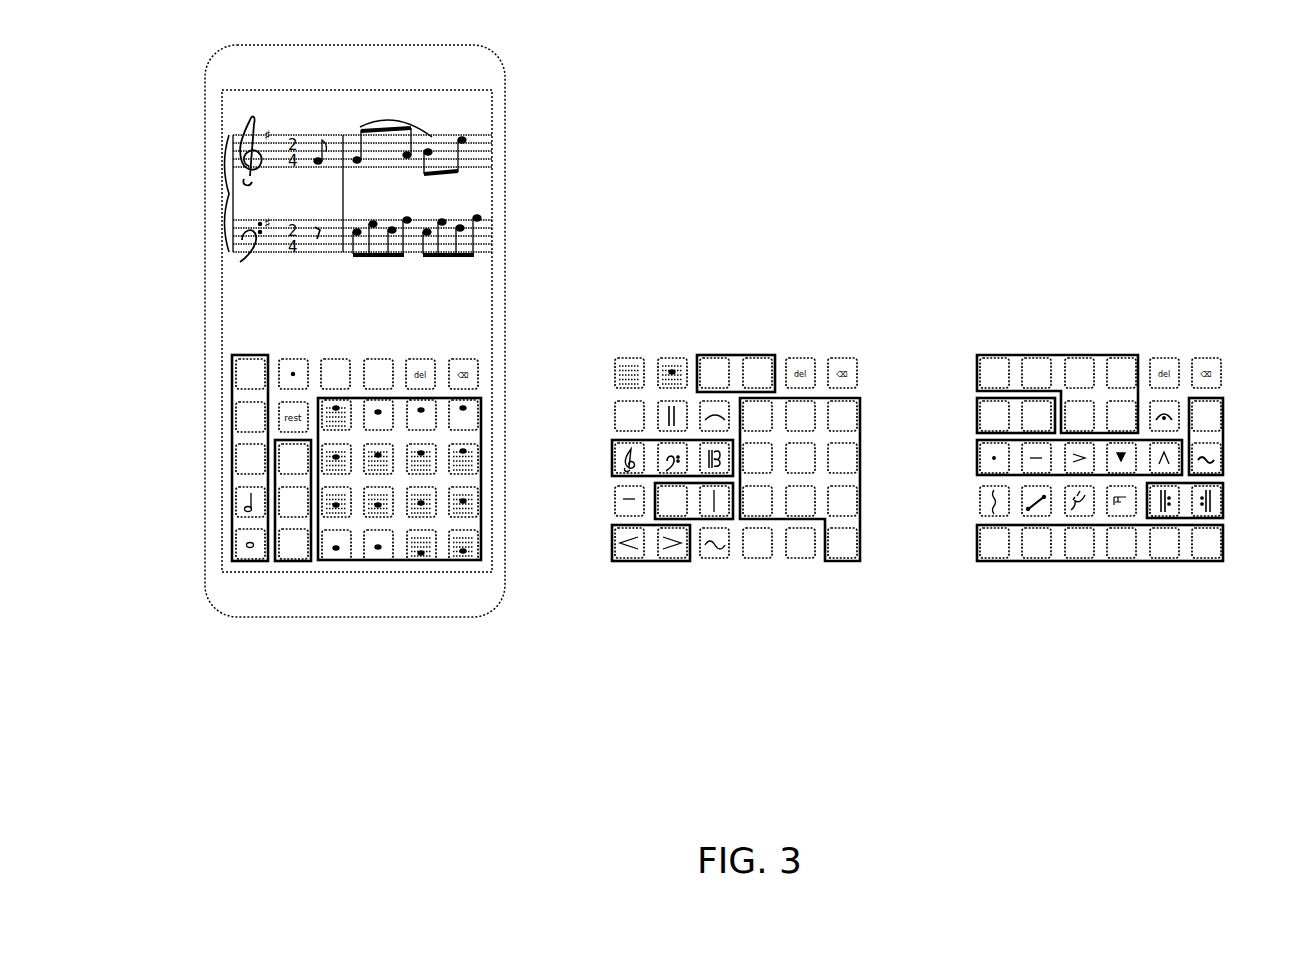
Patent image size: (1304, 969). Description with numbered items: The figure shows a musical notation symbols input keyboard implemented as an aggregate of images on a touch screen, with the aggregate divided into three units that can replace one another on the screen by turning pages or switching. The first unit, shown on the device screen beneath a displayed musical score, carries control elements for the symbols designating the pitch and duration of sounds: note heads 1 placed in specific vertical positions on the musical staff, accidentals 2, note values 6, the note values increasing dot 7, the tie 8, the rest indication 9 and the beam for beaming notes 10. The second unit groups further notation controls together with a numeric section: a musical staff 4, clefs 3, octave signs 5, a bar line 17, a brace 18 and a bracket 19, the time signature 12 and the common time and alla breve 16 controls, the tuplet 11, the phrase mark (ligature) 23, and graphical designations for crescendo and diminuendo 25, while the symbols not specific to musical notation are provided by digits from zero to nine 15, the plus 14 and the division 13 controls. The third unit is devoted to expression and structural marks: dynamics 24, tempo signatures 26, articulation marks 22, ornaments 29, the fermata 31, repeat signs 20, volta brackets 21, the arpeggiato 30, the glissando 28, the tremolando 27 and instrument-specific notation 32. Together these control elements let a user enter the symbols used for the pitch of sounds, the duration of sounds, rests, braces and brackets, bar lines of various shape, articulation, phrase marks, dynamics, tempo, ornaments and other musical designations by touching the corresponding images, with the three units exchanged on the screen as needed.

The note heads 1 is at (395, 563).
The accidentals 2 is at (290, 563).
The clefs 3 is at (615, 464).
The musical staff 4 is at (618, 358).
The octave signs 5 is at (752, 355).
The note values 6 is at (234, 487).
The note values increasing dot 7 is at (272, 388).
The tie 8 is at (397, 392).
The rest indication 9 is at (272, 432).
The beam for beaming notes 10 is at (322, 362).
The tuplet 11 is at (702, 559).
The time signature 12 is at (617, 503).
The division 13 is at (807, 558).
The plus 14 is at (760, 558).
The digits from 0 to 9 15 is at (853, 559).
The common time and alla breve 16 is at (728, 511).
The bar line 17 is at (660, 358).
The brace 18 is at (618, 404).
The bracket 19 is at (660, 428).
The repeat signs 20 is at (1225, 502).
The volta brackets 21 is at (1125, 507).
The articulation marks 22 is at (977, 453).
The phrase mark (ligature) 23 is at (703, 407).
The dynamics 24 is at (1058, 355).
The graphical designations for crescendo and diminuendo 25 is at (650, 561).
The tempo signatures 26 is at (977, 415).
The tremolando 27 is at (1085, 507).
The glissando 28 is at (1028, 510).
The ornaments 29 is at (1230, 410).
The arpeggiato 30 is at (980, 502).
The fermata 31 is at (1177, 427).
The instrument-specific notation 32 is at (977, 540).